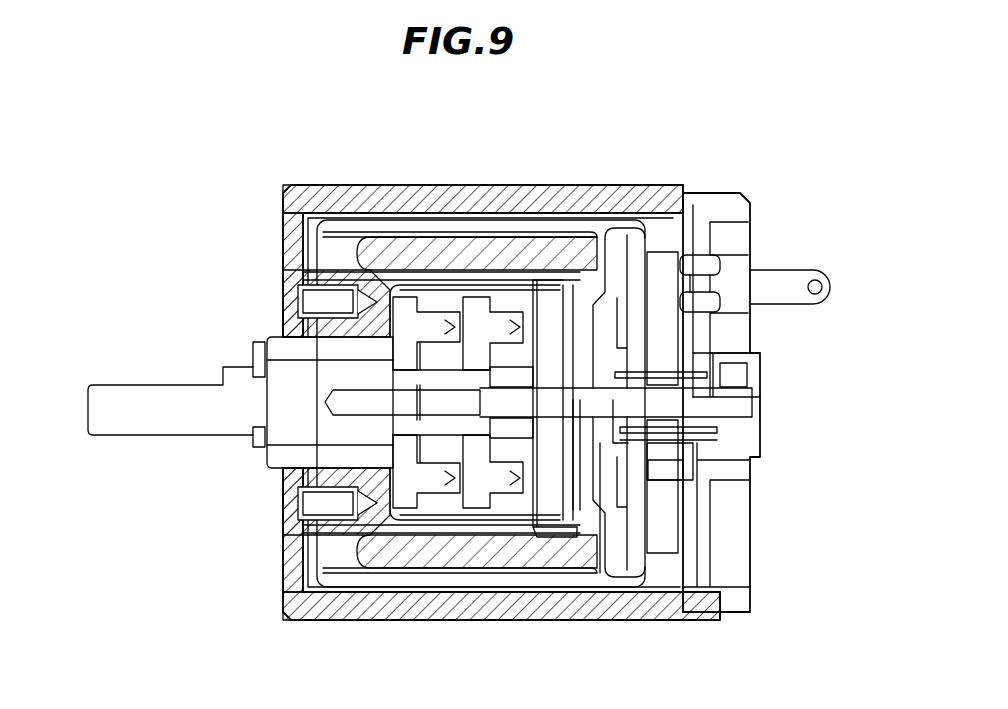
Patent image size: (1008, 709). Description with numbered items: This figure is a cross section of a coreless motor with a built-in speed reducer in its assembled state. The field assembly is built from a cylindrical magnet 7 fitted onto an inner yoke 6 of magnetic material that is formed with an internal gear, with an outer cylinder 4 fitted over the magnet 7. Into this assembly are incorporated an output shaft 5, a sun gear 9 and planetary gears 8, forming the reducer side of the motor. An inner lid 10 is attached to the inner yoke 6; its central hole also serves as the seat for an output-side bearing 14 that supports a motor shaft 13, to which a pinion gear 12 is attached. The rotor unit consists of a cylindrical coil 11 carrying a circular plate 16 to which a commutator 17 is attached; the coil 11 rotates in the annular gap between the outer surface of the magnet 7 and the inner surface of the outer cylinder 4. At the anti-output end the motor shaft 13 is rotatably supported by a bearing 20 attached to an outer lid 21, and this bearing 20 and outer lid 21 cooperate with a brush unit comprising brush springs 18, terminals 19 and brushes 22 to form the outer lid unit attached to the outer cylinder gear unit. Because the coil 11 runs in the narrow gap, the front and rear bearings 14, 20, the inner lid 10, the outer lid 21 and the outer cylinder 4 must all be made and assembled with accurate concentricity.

The outer cylinder 4 is at (313, 192).
The output shaft 5 is at (152, 396).
The inner yoke 6 is at (342, 537).
The cylindrical magnet 7 is at (385, 565).
The planetary gears 8 is at (507, 510).
The sun gear 9 is at (518, 480).
The inner lid 10 is at (553, 487).
The cylindrical coil 11 is at (385, 220).
The pinion gear 12 is at (507, 372).
The motor shaft 13 is at (554, 395).
The output-side bearing 14 is at (563, 385).
The circular plate 16 is at (607, 358).
The commutator 17 is at (667, 372).
The brush springs 18 is at (670, 270).
The terminals 19 is at (775, 275).
The bearing 20 is at (740, 372).
The outer lid 21 is at (740, 473).
The brushes 22 is at (665, 457).